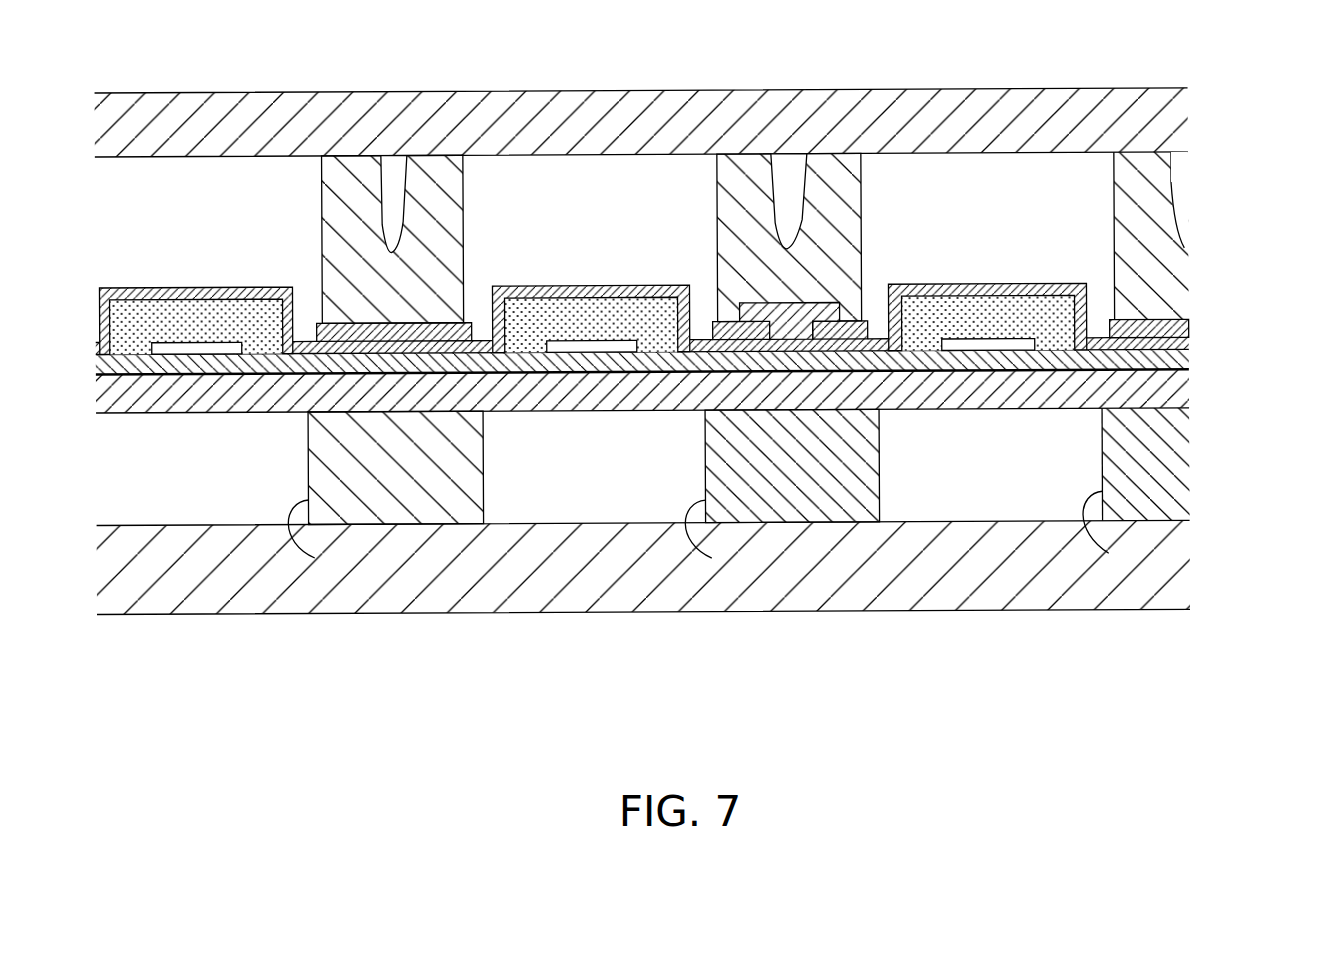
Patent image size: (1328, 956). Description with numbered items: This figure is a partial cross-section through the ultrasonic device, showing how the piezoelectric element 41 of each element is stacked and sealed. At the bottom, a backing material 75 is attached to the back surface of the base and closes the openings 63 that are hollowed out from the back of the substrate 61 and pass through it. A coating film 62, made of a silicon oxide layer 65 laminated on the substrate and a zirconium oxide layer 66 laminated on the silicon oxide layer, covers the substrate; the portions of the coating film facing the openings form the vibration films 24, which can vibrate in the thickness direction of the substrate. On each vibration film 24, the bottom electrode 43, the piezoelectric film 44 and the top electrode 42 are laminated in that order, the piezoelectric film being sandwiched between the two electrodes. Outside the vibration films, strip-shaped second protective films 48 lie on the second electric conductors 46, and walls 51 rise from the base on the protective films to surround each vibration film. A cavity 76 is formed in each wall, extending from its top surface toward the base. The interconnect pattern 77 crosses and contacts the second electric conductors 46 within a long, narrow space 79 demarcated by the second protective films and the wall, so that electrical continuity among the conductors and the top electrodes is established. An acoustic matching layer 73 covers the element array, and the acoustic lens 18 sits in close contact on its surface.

The acoustic lens 18 is at (170, 93).
The acoustic matching layer 73 is at (245, 170).
The cavity 76 is at (383, 157).
The wall 51 is at (328, 195).
The second electric conductor 46 is at (579, 265).
The piezoelectric element 41 is at (586, 265).
The top electrode 42 is at (106, 288).
The bottom electrode 43 is at (177, 343).
The piezoelectric film 44 is at (262, 309).
The second protective film 48 is at (420, 324).
The interconnect pattern 77 is at (790, 306).
The space 79 is at (805, 340).
The coating film 62 is at (709, 368).
The zirconium oxide layer 66 is at (1184, 364).
The silicon oxide layer 65 is at (679, 390).
The substrate 61 is at (1186, 479).
The vibration film 24 is at (200, 413).
The opening 63 is at (721, 541).
The backing material 75 is at (975, 615).